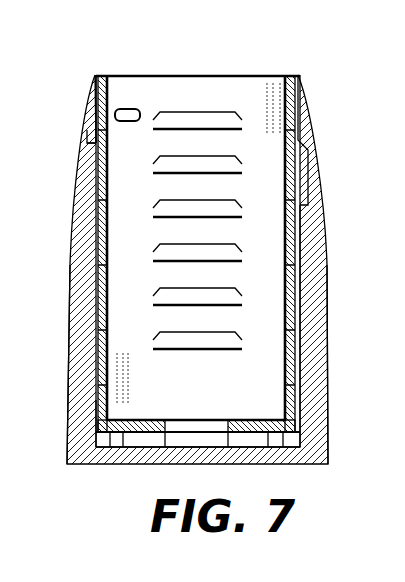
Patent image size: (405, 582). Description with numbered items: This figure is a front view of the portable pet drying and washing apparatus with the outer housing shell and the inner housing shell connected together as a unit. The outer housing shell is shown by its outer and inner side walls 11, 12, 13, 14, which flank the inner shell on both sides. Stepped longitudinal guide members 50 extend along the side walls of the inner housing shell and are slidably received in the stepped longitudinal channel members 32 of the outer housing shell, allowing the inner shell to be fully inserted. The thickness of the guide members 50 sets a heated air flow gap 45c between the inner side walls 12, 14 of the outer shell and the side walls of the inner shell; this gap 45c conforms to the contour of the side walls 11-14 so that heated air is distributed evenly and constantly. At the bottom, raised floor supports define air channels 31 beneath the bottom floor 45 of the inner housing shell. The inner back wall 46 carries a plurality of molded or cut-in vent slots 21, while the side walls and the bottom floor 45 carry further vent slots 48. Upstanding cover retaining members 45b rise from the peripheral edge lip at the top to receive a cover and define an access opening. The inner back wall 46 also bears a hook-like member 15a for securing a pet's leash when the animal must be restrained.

The outer side wall of outer housing shell 11 is at (323, 257).
The inner side wall of outer housing shell 12 is at (302, 358).
The outer side wall of outer housing shell 13 is at (77, 218).
The inner side wall of outer housing shell 14 is at (92, 353).
The hook-like member 15a is at (128, 106).
The vent slots 21 is at (180, 113).
The air channels 31 is at (140, 438).
The stepped longitudinal channel members 32 is at (80, 182).
The bottom floor 45 is at (115, 408).
The cover retaining members 45b is at (118, 73).
The heated air flow gap 45c is at (300, 238).
The inner back wall 46 is at (202, 384).
The vent slots 48 is at (295, 107).
The stepped longitudinal guide member 50 is at (80, 168).